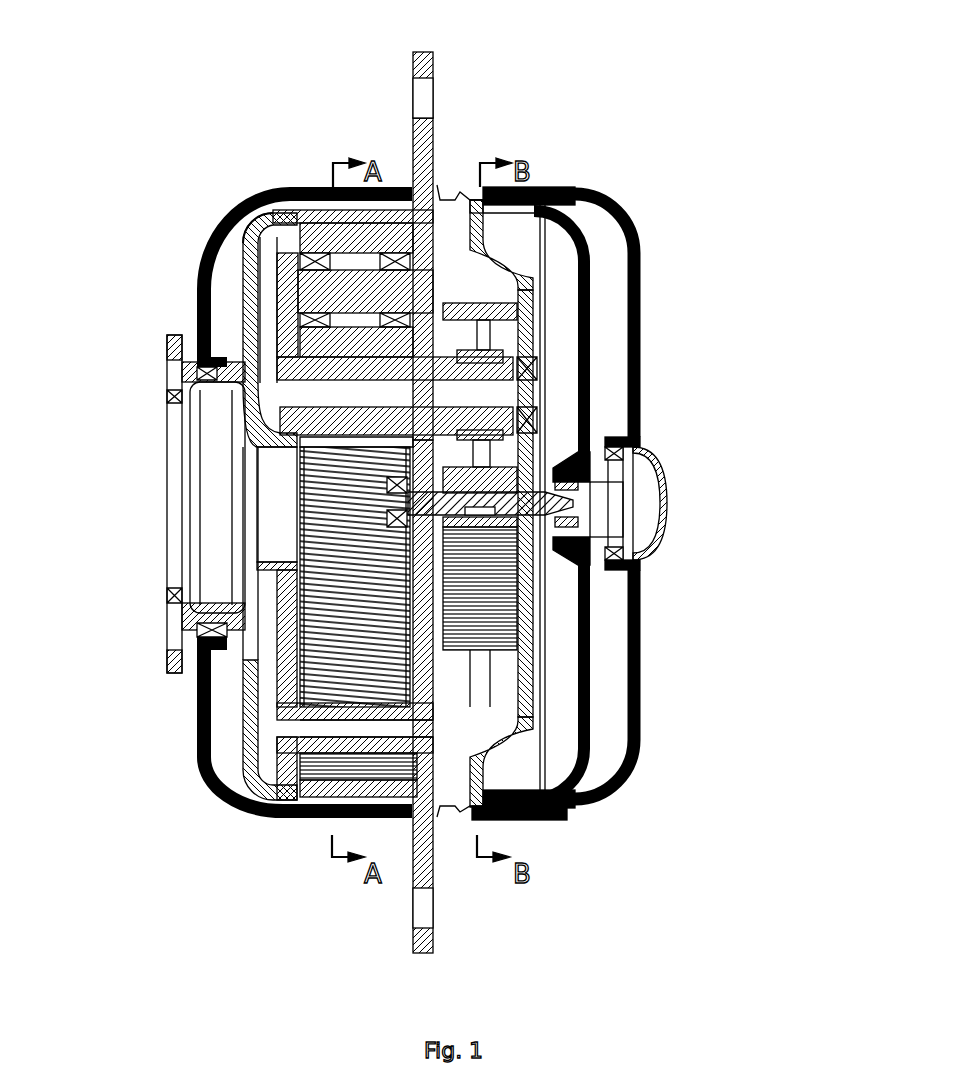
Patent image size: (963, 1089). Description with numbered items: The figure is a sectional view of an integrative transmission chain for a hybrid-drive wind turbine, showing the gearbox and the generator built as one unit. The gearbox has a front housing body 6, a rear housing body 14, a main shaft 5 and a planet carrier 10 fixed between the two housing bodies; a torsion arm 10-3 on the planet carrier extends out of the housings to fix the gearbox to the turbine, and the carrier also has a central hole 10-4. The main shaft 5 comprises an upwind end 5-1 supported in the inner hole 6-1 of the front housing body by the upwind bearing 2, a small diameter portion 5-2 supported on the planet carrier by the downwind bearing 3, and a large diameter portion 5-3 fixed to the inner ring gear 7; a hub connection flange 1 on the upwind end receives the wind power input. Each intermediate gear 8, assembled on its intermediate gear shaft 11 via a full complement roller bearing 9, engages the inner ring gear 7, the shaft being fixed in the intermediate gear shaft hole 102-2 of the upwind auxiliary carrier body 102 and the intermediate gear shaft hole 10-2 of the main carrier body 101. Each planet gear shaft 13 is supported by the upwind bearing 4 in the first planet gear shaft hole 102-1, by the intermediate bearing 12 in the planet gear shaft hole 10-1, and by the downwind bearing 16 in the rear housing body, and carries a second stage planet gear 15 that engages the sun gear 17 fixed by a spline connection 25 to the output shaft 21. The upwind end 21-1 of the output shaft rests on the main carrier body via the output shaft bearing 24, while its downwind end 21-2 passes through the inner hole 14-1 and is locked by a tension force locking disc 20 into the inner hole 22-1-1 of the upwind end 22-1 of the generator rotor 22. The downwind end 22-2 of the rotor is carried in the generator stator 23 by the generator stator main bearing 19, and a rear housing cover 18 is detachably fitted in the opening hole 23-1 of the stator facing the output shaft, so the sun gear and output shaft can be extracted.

The hub connection flange 1 is at (167, 398).
The upwind bearing of main shaft 2 is at (198, 373).
The downwind bearing of main shaft 3 is at (203, 345).
The upwind bearing of planet gear shaft 4 is at (200, 287).
The main shaft 5 is at (243, 310).
The upwind end of main shaft 5-1 is at (197, 645).
The small diameter portion of downwind end of main shaft 5-2 is at (253, 587).
The large diameter portion of downwind end of main shaft 5-3 is at (280, 800).
The front housing body 6 is at (287, 270).
The inner hole in the front housing body 6-1 is at (190, 628).
The inner ring gear 7 is at (347, 233).
The intermediate gear 8 is at (363, 257).
The full complement roller bearing 9 is at (395, 257).
The planet carrier 10 is at (513, 143).
The planet gear shaft hole of the planet carrier 10-1 is at (420, 343).
The intermediate gear shaft hole 10-2 is at (433, 270).
The torsion arm 10-3 is at (422, 70).
The central hole of the planet carrier 10-4 is at (455, 525).
The intermediate gear shaft 11 is at (483, 213).
The intermediate bearing of the planet gear shaft 12 is at (588, 245).
The planet gear shaft 13 is at (622, 225).
The rear housing body 14 is at (533, 288).
The inner hole of the rear housing body 14-1 is at (590, 640).
The second stage planet gear 15 is at (498, 322).
The downwind bearing of planet gear shaft 16 is at (530, 370).
The sun gear 17 is at (565, 497).
The rear housing cover 18 is at (647, 563).
The generator stator main bearing 19 is at (640, 572).
The tension force locking disc 20 is at (637, 600).
The output shaft 21 is at (638, 733).
The upwind end of the output shaft 21-1 is at (400, 508).
The downwind end of the output shaft 21-2 is at (572, 503).
The generator rotor 22 is at (585, 775).
The upwind end of the generator rotor 22-1 is at (640, 700).
The inner hole of the upwind end of the generator rotor 22-1-1 is at (640, 660).
The downwind end of the generator rotor 22-2 is at (640, 557).
The generator stator 23 is at (567, 818).
The opening hole 23-1 is at (645, 478).
The output shaft bearing 24 is at (390, 540).
The spline connection 25 is at (477, 515).
The main carrier body of the planet carrier 101 is at (423, 767).
The upwind auxiliary carrier body of the planet carrier 102 is at (290, 665).
The first planet gear shaft hole 102-1 is at (287, 433).
The intermediate gear shaft hole 102-2 is at (277, 240).